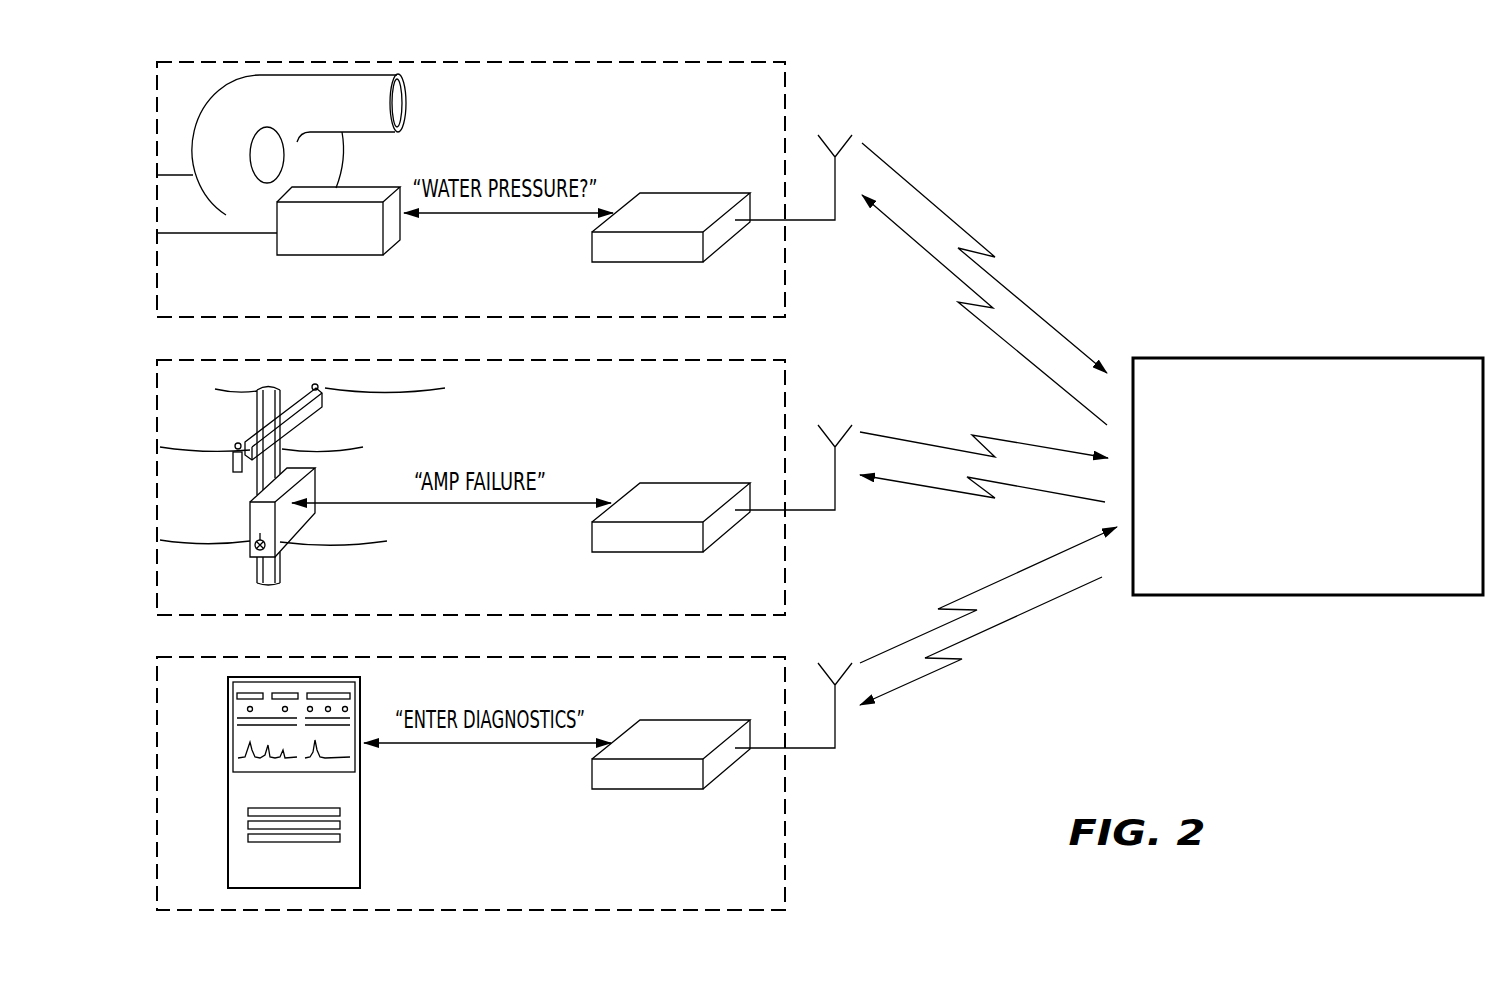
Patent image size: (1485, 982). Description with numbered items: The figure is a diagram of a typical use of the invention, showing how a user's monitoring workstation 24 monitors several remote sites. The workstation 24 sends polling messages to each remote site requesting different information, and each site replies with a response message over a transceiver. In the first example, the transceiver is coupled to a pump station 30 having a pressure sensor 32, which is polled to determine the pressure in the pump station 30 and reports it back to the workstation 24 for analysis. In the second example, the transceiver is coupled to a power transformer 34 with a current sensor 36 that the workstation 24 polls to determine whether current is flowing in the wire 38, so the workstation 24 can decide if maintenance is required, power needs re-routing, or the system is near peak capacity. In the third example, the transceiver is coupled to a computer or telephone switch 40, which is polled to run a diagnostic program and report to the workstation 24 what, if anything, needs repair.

The workstation 24 is at (1277, 360).
The pump station 30 is at (392, 243).
The pressure sensor 32 is at (410, 98).
The power transformer 34 is at (287, 550).
The current sensor 36 is at (251, 555).
The wire 38 is at (203, 541).
The computer or telephone switch 40 is at (360, 788).